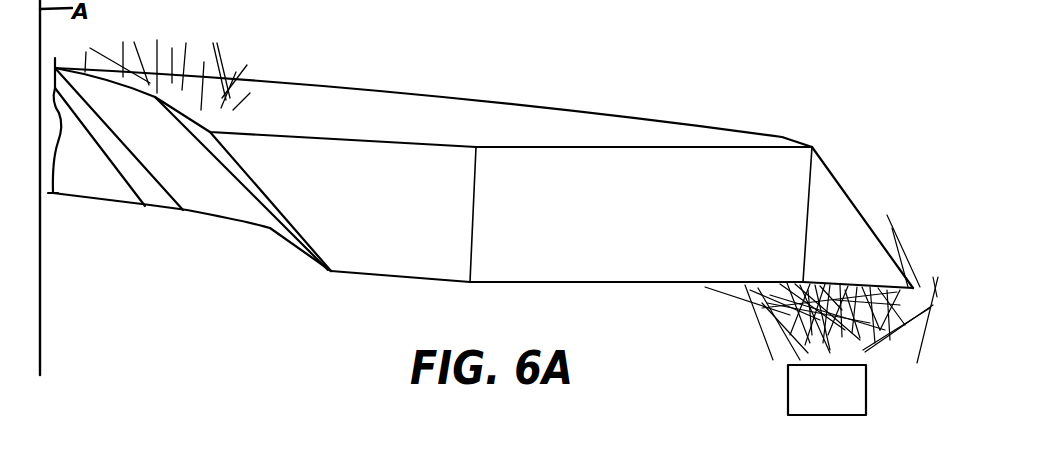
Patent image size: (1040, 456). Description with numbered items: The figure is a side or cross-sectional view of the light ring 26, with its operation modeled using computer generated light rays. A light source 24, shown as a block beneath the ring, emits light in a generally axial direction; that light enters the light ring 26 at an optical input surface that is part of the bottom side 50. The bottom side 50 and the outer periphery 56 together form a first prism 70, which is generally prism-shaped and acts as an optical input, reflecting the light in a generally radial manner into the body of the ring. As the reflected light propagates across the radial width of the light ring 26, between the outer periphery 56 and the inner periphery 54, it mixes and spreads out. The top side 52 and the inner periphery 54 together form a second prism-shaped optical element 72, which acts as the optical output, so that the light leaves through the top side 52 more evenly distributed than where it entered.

The light source 24 is at (806, 384).
The light ring 26 is at (697, 102).
The bottom side 50 is at (667, 283).
The top side 52 is at (546, 138).
The inner periphery 54 is at (280, 212).
The outer periphery 56 is at (845, 185).
The first prism 70 is at (853, 245).
The optical element 72 is at (255, 150).